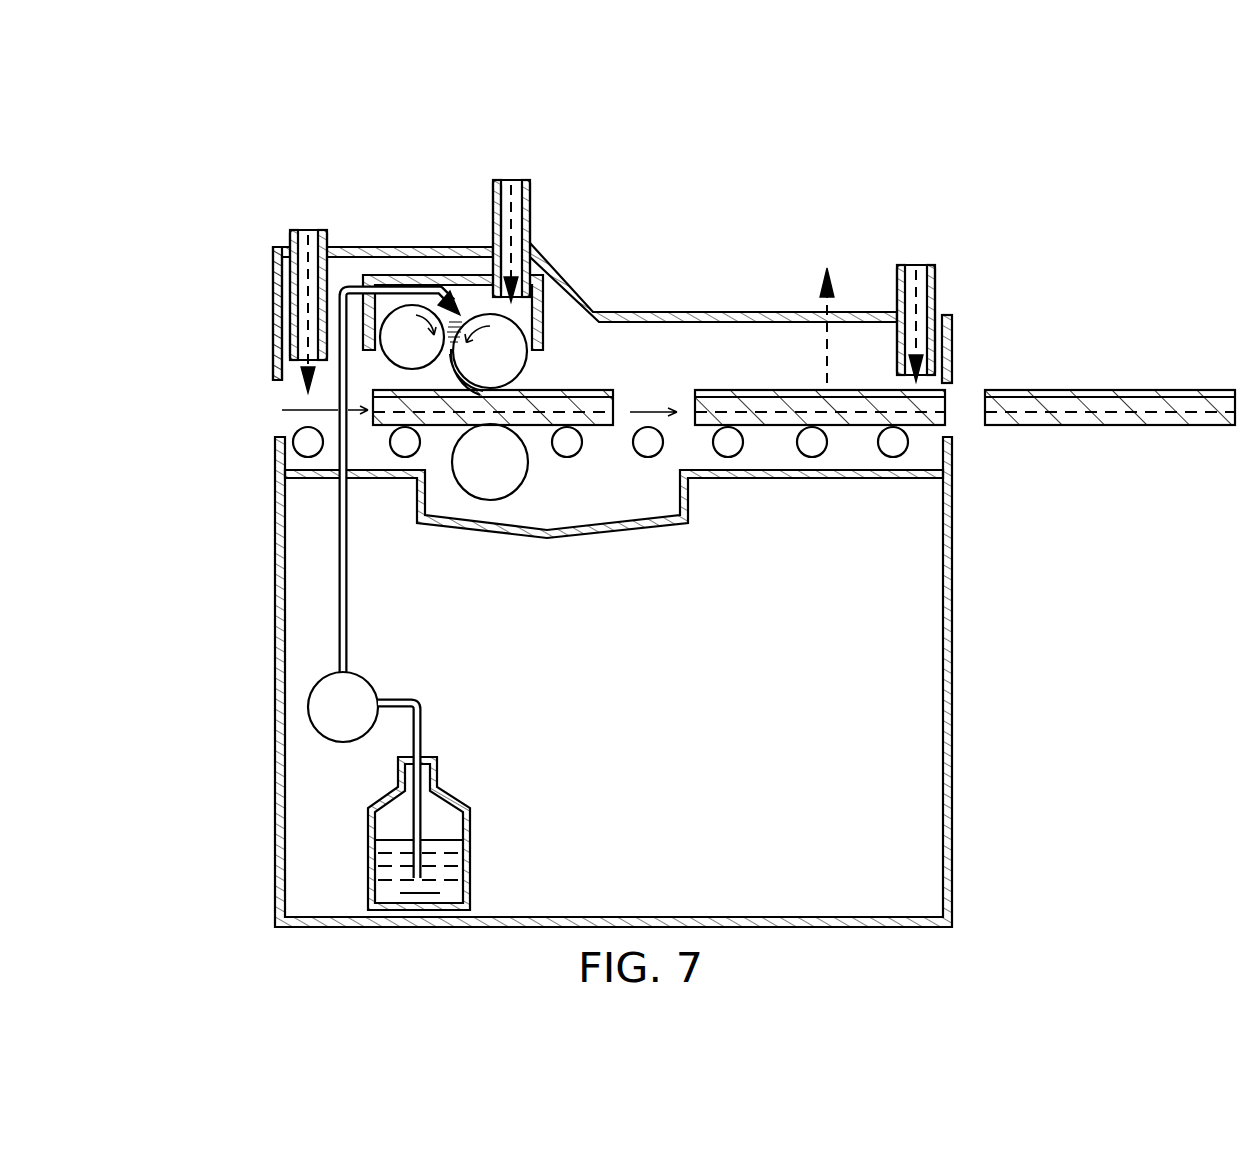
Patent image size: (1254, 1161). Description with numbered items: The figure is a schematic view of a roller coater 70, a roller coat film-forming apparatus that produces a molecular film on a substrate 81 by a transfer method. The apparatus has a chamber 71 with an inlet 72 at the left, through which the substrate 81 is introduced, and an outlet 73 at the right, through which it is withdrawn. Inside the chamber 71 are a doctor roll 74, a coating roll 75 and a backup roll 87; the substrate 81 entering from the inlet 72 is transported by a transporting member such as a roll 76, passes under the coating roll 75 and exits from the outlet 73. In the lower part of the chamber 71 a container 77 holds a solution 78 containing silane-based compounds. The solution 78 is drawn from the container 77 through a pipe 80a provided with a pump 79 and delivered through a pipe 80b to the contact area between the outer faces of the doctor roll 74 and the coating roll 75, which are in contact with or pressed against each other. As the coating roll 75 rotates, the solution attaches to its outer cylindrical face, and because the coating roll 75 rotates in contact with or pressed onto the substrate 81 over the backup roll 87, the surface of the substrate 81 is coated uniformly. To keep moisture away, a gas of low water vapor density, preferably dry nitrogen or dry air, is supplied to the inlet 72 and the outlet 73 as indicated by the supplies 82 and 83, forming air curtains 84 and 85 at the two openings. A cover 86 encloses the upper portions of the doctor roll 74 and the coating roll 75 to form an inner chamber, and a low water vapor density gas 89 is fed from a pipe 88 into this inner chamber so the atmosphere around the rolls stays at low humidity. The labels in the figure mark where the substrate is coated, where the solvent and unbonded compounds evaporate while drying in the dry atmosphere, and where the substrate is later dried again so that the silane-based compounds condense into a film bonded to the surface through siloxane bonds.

The roller coater 70 is at (728, 274).
The chamber 71 is at (648, 312).
The inlet 72 is at (282, 418).
The outlet 73 is at (950, 410).
The doctor roll 74 is at (403, 310).
The coating roll 75 is at (507, 332).
The roll 76 is at (810, 450).
The container 77 is at (470, 826).
The solution 78 is at (450, 876).
The pump 79 is at (308, 707).
The pipe 80a is at (422, 740).
The pipe 80b is at (338, 605).
The substrate 81 is at (533, 425).
The gas supply 82 is at (305, 262).
The gas supply 83 is at (917, 293).
The air curtain 84 is at (275, 298).
The air curtain 85 is at (943, 340).
The cover 86 is at (468, 247).
The backup roll 87 is at (495, 500).
The pipe 88 is at (493, 197).
The gas having a low water vapor density 89 is at (528, 207).